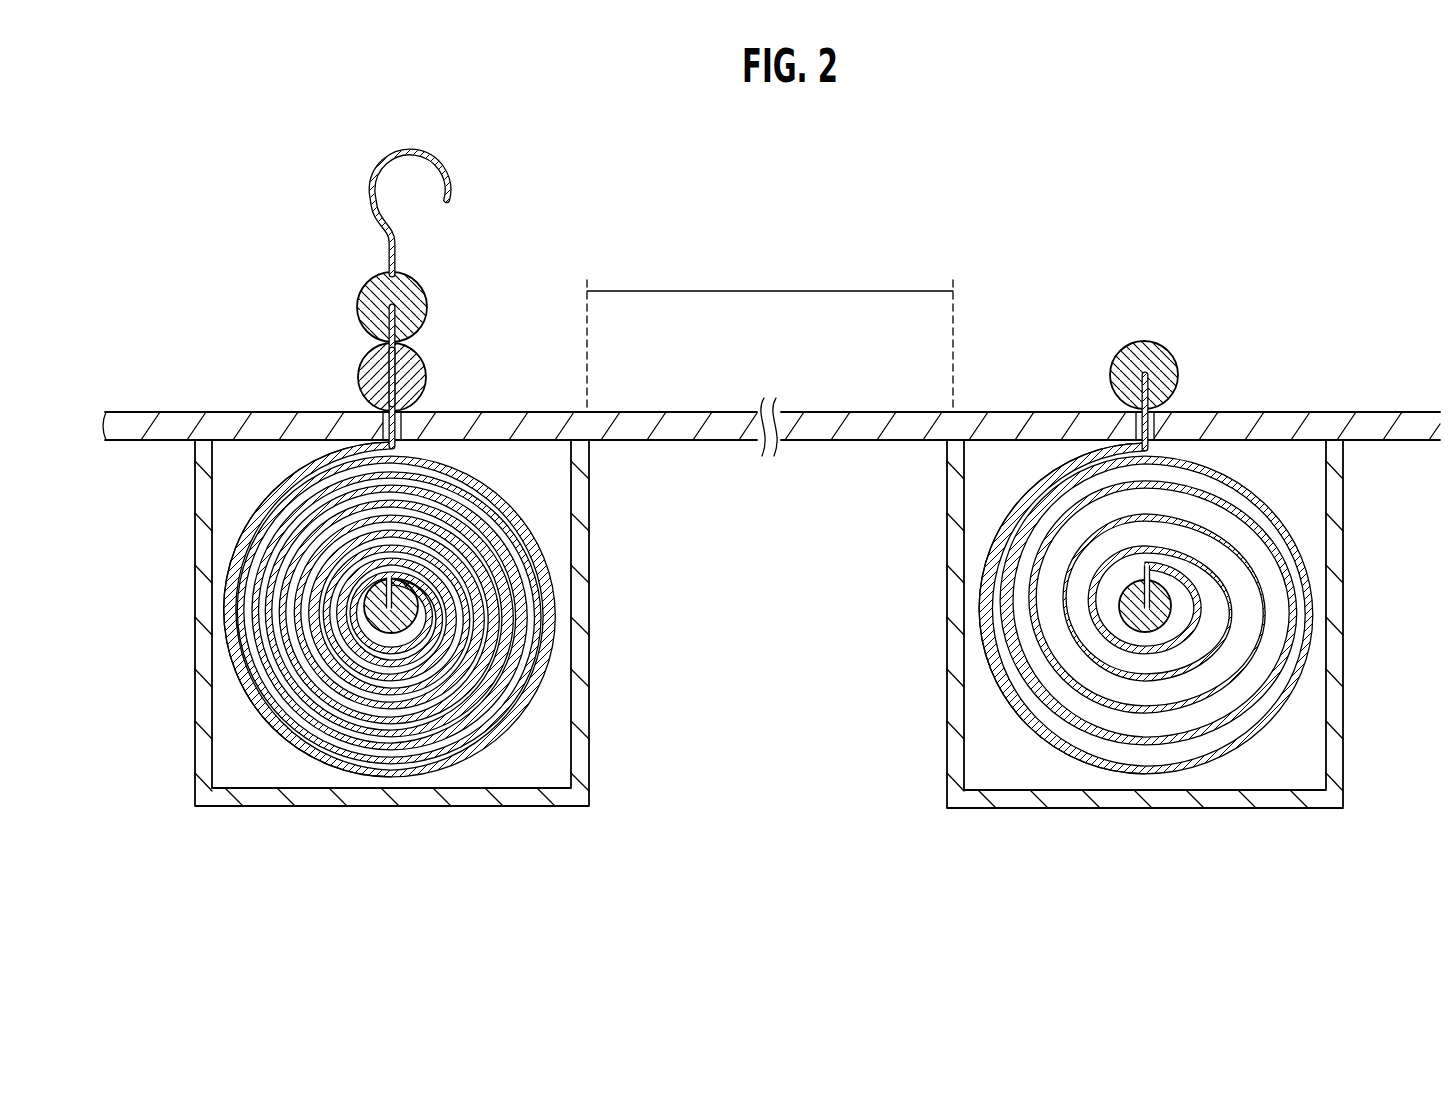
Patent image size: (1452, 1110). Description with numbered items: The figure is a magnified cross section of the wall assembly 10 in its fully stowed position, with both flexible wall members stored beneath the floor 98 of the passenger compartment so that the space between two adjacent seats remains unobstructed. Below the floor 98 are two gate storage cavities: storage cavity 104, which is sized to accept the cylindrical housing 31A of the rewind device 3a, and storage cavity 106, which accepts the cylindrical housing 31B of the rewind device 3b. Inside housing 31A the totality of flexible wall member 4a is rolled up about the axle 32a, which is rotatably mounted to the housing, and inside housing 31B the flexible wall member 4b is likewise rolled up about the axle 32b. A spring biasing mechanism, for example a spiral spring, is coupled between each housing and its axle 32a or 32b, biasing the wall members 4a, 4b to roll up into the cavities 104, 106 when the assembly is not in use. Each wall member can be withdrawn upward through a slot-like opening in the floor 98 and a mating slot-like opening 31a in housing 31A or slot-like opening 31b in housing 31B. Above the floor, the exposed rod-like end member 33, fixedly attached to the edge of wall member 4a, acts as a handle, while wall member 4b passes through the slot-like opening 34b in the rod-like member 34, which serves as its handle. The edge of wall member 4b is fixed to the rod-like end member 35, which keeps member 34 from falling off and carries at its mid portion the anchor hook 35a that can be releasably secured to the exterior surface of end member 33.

The wall assembly 10 is at (908, 220).
The floor 98 is at (860, 412).
The rewind device 3a is at (1290, 465).
The rewind device 3b is at (515, 465).
The flexible wall member 4a is at (1012, 620).
The flexible wall member 4b is at (555, 600).
The slot-like opening 31a is at (1132, 450).
The slot-like opening 31b is at (380, 433).
The housing 31A is at (1283, 708).
The housing 31B is at (252, 705).
The axle 32a is at (1130, 625).
The axle 32b is at (378, 625).
The rod-like end member 33 is at (1170, 350).
The rod-like member 34 is at (430, 362).
The slot-like opening 34b is at (385, 374).
The end member 35 is at (418, 282).
The anchor hook 35a is at (372, 160).
The storage cavity 104 is at (1318, 517).
The storage cavity 106 is at (216, 520).